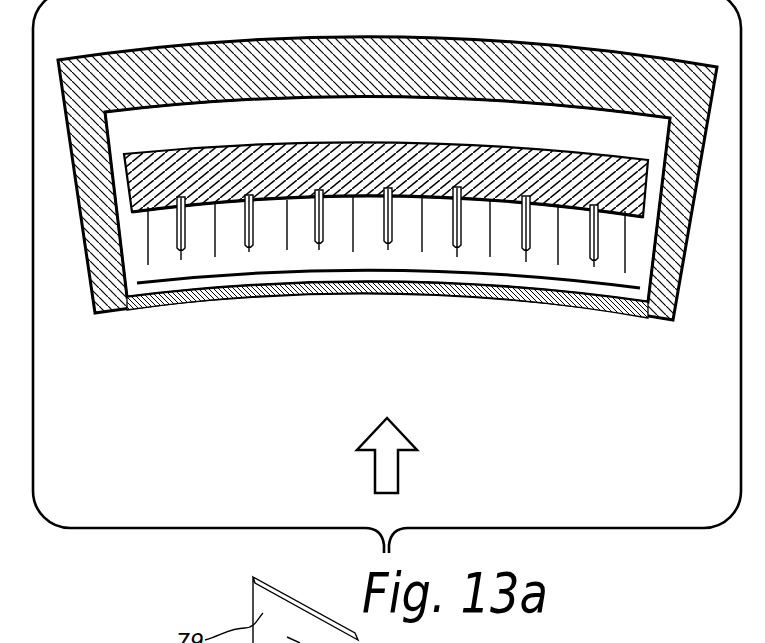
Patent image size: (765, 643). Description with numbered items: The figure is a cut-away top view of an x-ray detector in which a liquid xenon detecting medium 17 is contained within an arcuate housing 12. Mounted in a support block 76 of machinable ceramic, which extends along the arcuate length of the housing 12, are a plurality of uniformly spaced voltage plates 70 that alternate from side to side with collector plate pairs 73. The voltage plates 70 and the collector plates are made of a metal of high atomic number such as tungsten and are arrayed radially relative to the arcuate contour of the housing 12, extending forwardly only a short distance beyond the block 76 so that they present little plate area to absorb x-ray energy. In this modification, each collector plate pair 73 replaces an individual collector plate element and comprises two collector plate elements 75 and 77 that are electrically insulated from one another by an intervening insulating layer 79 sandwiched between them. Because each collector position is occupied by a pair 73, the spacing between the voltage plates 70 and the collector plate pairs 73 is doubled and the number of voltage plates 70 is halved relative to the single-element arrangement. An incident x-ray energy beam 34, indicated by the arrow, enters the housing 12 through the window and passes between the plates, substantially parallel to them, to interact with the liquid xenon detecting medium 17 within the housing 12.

The housing 12 is at (153, 47).
The liquid xenon detecting medium 17 is at (402, 129).
The support block 76 is at (587, 153).
The voltage plates 70 is at (218, 249).
The collector plate pair 73 is at (181, 237).
The collector plate element 75 is at (534, 240).
The collector plate element 77 is at (520, 240).
The insulating layer 79 is at (525, 260).
The incident x-ray energy beam 34 is at (375, 473).